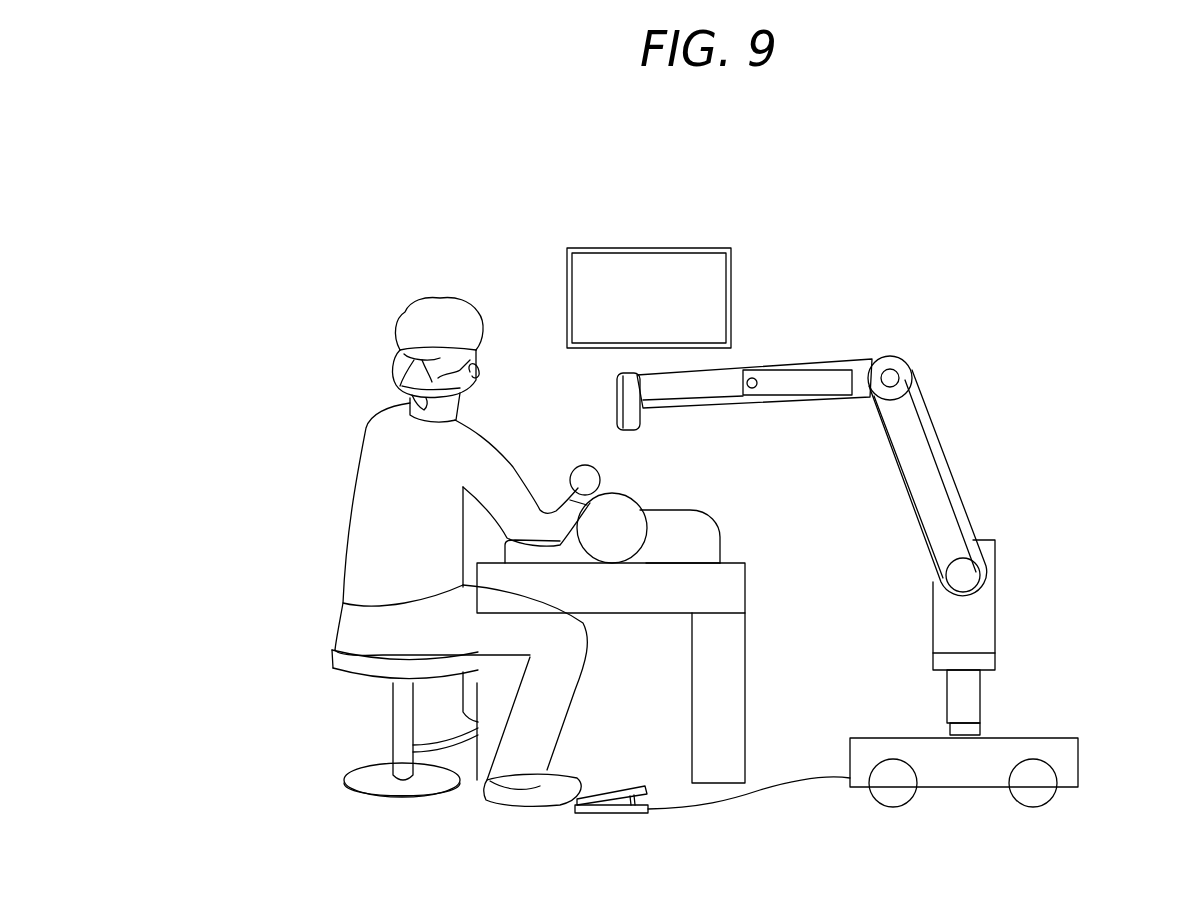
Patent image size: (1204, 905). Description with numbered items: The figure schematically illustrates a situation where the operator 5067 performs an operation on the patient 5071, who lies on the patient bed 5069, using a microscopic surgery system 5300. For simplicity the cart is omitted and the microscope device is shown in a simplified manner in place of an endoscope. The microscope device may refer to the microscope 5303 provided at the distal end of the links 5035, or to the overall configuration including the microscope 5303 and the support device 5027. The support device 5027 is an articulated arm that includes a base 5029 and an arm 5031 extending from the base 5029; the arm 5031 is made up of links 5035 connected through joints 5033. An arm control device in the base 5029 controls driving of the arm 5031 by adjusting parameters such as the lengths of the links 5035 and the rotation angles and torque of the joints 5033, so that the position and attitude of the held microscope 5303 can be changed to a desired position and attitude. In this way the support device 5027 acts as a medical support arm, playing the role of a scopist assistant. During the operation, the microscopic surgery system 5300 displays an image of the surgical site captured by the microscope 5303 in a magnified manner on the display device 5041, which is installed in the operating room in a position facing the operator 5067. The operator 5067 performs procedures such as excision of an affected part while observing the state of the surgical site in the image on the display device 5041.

The microscopic surgery system 5300 is at (1115, 272).
The operator 5067 is at (367, 433).
The patient bed 5069 is at (745, 592).
The patient 5071 is at (715, 540).
The display device 5041 is at (648, 248).
The arm 5031 is at (600, 408).
The joint 5033 is at (900, 370).
The microscope 5303 is at (633, 420).
The link 5035 is at (888, 458).
The support device 5027 is at (1053, 567).
The base 5029 is at (1050, 738).